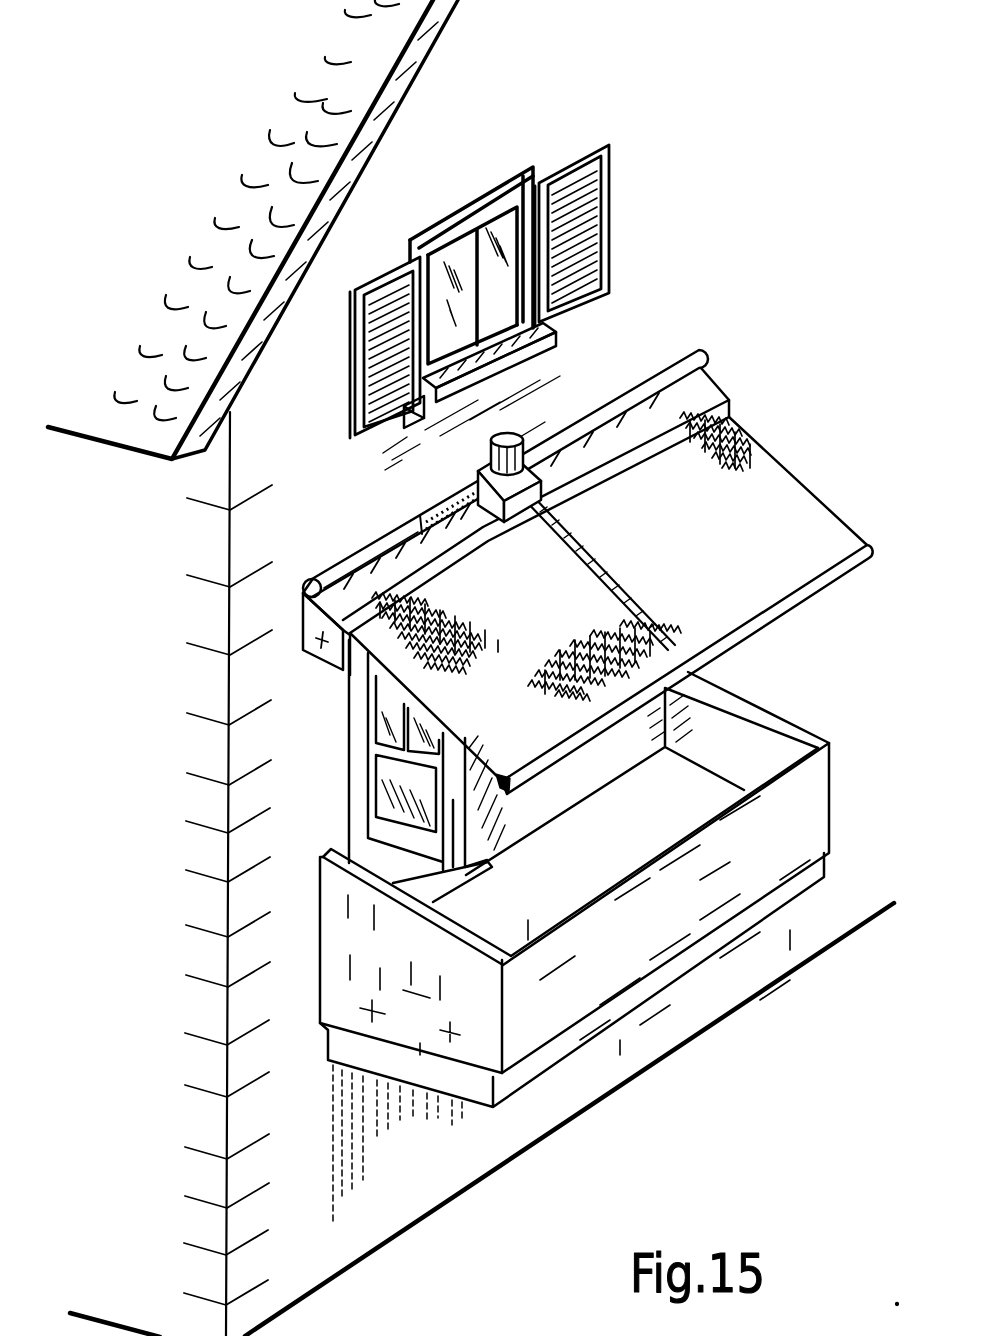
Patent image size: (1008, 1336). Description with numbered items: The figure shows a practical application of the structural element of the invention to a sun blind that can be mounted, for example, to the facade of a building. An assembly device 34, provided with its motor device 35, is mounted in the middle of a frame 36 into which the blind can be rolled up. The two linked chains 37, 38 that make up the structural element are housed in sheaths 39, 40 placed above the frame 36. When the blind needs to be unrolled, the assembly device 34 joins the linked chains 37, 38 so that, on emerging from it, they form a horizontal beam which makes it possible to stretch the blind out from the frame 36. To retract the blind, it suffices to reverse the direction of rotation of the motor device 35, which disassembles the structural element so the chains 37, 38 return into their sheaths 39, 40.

The assembly device 34 is at (547, 446).
The motor device 35 is at (506, 438).
The frame 36 is at (690, 407).
The linked chain 37 is at (443, 492).
The linked chain 38 is at (588, 548).
The sheath 39 is at (342, 549).
The sheath 40 is at (663, 372).